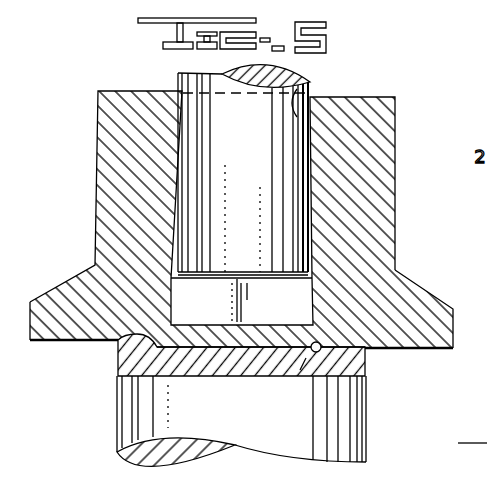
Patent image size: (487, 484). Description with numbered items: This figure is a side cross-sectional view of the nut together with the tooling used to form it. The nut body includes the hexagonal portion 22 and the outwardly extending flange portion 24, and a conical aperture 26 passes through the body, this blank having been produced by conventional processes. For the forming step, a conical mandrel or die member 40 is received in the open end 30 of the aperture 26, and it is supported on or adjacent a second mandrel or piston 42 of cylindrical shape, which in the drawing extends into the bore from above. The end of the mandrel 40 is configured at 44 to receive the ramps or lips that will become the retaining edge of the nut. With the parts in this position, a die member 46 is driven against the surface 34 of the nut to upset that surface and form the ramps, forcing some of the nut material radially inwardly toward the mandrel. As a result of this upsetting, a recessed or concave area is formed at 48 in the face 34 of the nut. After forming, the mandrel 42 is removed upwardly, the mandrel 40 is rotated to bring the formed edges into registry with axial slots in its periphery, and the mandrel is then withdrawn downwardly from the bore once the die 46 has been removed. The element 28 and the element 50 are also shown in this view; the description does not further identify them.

The hexagonal portion 22 is at (115, 132).
The flange portion 24 is at (428, 304).
The conical aperture 26 is at (311, 84).
The plate 28 is at (157, 349).
The open end 30 is at (184, 326).
The surface 34 is at (425, 350).
The conical mandrel 40 is at (267, 300).
The second mandrel 42 is at (203, 108).
The configured end 44 is at (300, 370).
The die member 46 is at (263, 432).
The recessed area 48 is at (62, 342).
The seal ring 50 is at (322, 350).